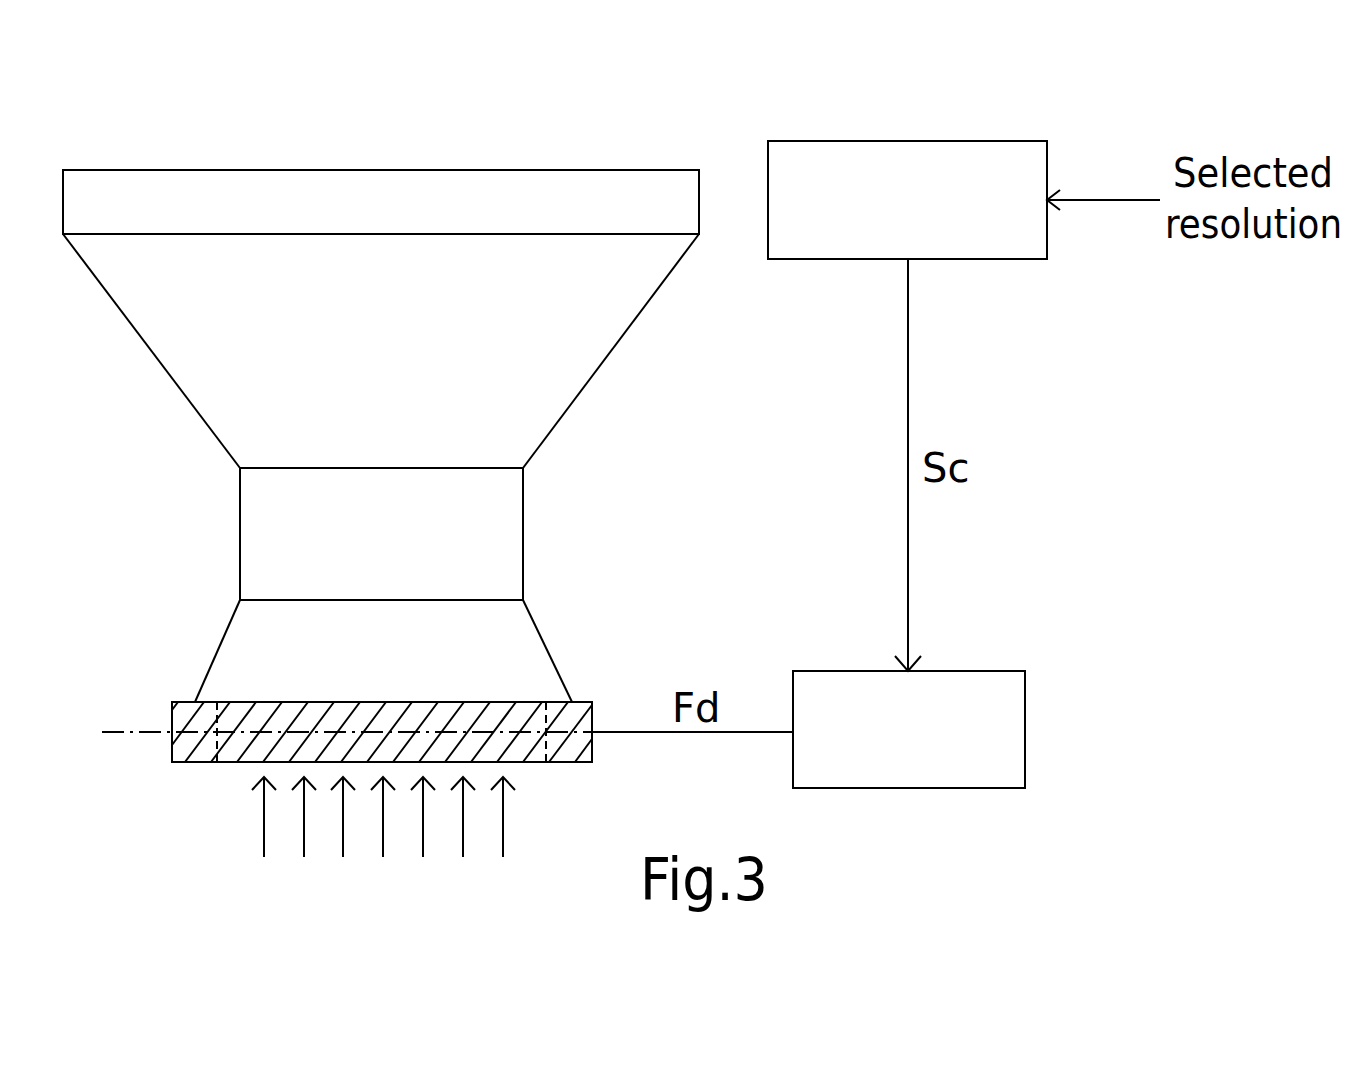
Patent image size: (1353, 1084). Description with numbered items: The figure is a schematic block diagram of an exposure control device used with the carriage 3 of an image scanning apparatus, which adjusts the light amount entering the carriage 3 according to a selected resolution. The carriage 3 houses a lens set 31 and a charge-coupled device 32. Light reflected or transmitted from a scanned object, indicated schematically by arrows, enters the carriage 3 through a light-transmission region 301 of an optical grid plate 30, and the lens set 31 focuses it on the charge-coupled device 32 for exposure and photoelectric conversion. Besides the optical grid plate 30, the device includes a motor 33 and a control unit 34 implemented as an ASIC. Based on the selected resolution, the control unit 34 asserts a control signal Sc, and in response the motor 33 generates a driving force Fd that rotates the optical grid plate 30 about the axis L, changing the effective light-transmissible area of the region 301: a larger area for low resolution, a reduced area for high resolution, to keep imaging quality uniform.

The carriage 3 is at (210, 490).
The optical grid plate 30 is at (577, 720).
The light-transmission region 301 is at (420, 712).
The lens set 31 is at (505, 545).
The charge-coupled device 32 is at (645, 188).
The motor 33 is at (968, 688).
The control unit 34 is at (988, 158).
The axis L is at (147, 728).